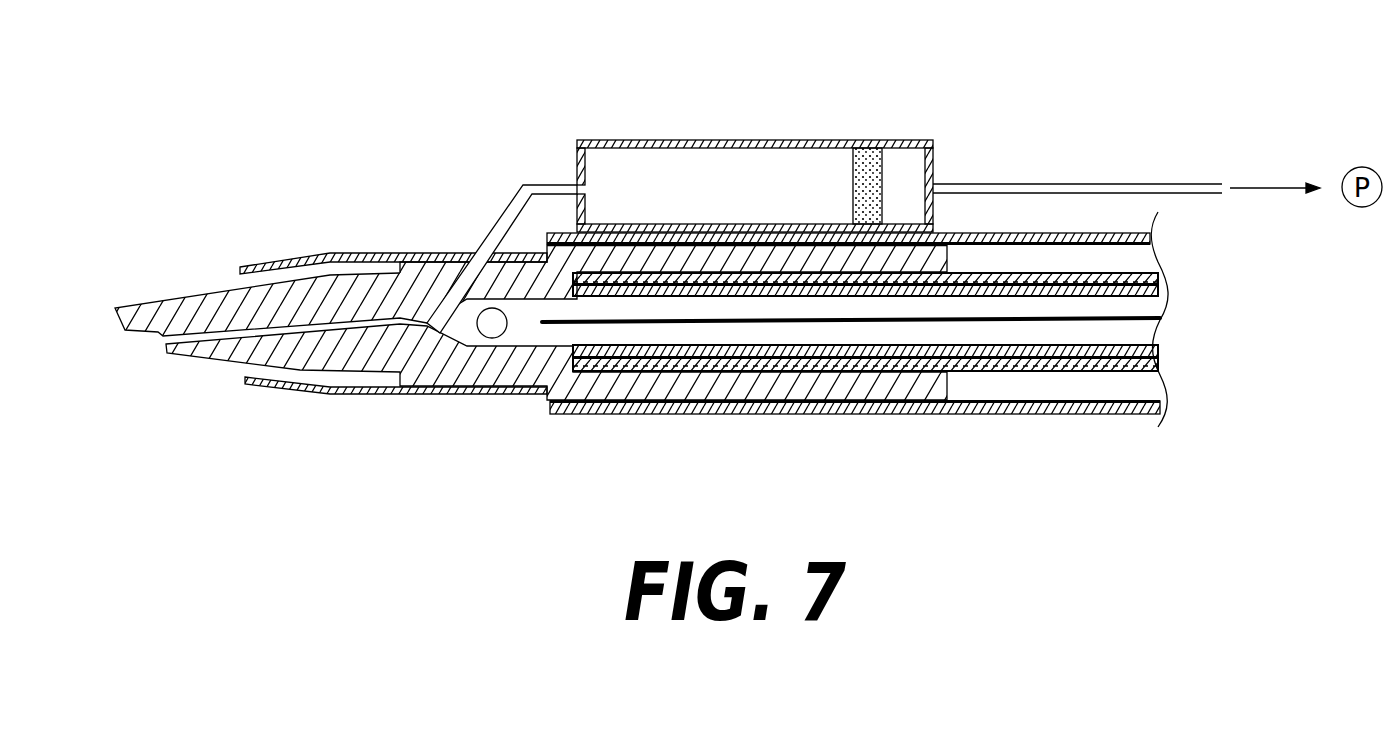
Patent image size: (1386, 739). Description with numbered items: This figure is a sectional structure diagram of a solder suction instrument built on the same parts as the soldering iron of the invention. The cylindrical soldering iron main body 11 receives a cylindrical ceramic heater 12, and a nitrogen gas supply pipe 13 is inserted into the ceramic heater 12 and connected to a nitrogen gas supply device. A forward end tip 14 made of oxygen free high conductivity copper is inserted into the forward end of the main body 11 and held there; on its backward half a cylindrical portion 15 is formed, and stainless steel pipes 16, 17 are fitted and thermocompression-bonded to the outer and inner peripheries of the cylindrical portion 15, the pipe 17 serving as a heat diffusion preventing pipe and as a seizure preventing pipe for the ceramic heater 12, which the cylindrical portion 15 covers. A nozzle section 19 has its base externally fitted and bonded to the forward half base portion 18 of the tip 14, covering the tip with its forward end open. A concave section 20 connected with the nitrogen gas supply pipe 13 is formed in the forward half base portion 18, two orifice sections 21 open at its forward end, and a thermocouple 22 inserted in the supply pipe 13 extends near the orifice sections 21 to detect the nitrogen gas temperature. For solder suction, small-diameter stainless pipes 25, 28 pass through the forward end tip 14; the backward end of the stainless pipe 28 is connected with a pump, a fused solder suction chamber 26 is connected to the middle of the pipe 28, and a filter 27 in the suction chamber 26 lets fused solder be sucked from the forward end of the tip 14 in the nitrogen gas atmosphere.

The soldering iron main body 11 is at (1068, 232).
The ceramic heater 12 is at (1083, 372).
The nitrogen gas supply pipe 13 is at (665, 342).
The forward end tip 14 is at (165, 296).
The cylindrical portion 15 is at (815, 247).
The pipe 16 is at (905, 224).
The pipe 17 is at (727, 272).
The forward half base portion 18 is at (446, 368).
The nozzle section 19 is at (333, 252).
The concave section 20 is at (556, 300).
The orifice section 21 is at (488, 312).
The thermocouple 22 is at (968, 340).
The stainless pipe 25 is at (230, 343).
The fused solder suction chamber 26 is at (653, 140).
The filter 27 is at (867, 148).
The stainless pipe 28 is at (510, 197).